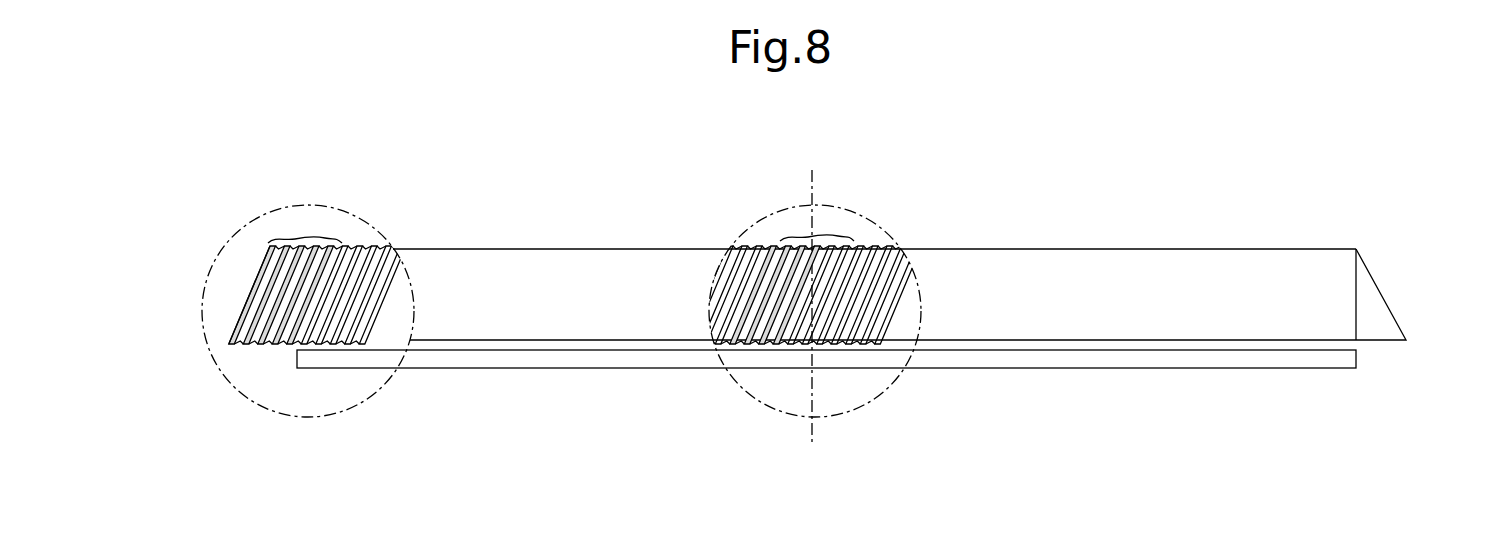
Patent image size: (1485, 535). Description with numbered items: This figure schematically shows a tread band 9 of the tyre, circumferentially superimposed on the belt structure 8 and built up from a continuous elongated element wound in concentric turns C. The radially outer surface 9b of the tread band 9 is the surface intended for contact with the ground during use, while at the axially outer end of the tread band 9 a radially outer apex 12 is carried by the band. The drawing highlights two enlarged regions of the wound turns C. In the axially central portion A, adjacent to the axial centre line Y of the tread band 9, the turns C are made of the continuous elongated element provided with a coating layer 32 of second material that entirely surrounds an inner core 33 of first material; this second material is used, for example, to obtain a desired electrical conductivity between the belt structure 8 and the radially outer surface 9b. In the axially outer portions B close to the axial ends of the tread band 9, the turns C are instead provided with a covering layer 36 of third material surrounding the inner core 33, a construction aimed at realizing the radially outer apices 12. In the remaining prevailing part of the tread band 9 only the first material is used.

The belt structure 8 is at (1357, 359).
The tread band 9 is at (1280, 249).
The radially outer surface 9b is at (1212, 248).
The radially outer apex 12 is at (1370, 308).
The coating layer 32 is at (768, 339).
The inner core 33 is at (242, 334).
The covering layer 36 is at (245, 302).
The axially central portion A is at (836, 236).
The axially outer portions B is at (325, 237).
The turns C is at (262, 290).
The axial centre line Y is at (812, 428).